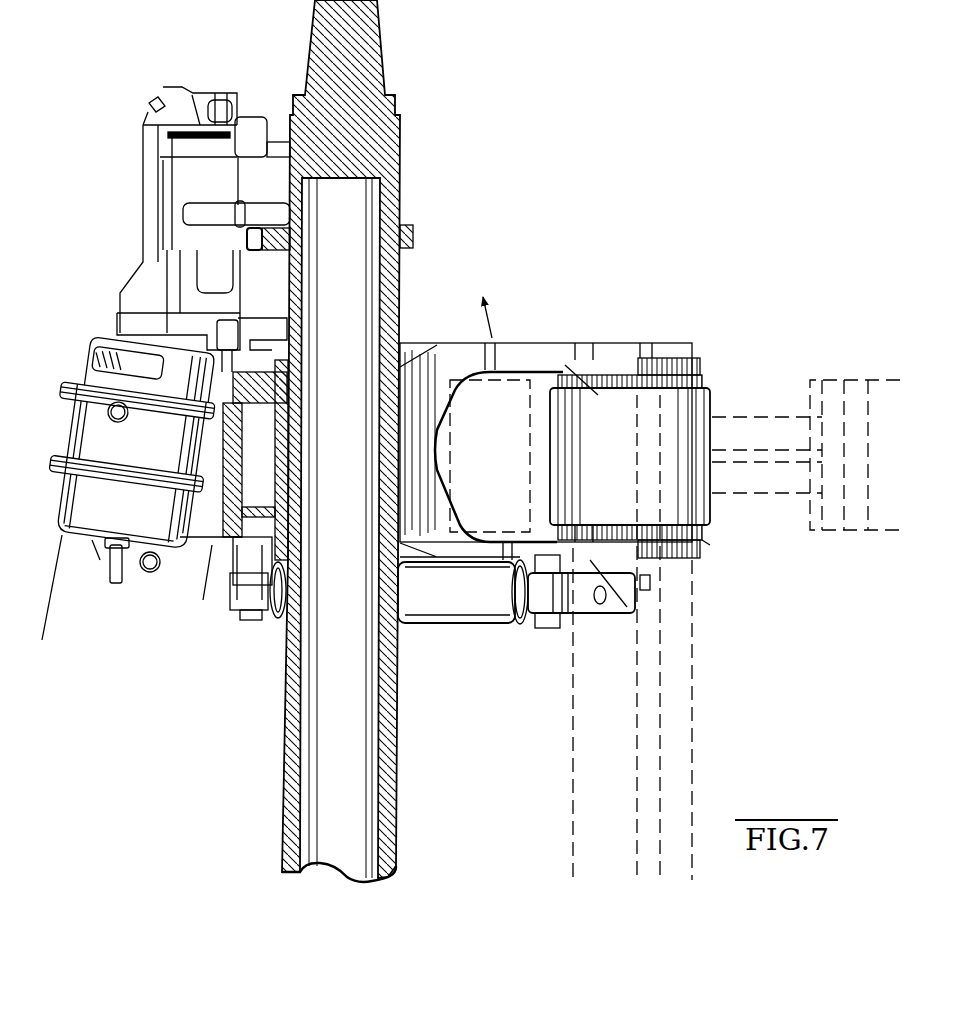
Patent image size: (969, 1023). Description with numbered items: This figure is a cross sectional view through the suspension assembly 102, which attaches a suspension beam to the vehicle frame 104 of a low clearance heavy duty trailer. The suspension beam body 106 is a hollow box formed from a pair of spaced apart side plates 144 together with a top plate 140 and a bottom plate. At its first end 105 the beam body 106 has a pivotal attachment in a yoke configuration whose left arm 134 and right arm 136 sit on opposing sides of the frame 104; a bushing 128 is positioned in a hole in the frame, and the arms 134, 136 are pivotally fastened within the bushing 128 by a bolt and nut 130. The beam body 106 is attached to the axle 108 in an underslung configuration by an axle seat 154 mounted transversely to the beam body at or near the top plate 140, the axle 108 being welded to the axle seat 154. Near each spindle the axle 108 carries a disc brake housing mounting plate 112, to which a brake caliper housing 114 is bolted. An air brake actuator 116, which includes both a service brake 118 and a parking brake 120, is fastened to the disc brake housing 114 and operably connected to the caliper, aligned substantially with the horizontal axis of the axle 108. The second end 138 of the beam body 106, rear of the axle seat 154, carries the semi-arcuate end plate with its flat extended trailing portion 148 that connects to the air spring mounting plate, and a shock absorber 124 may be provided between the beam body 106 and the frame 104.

The suspension assembly 102 is at (433, 415).
The vehicle frame 104 is at (865, 380).
The first end 105 is at (598, 396).
The suspension beam body 106 is at (714, 396).
The axle 108 is at (388, 167).
The disc brake housing mounting plate 112 is at (410, 225).
The brake caliper housing 114 is at (203, 93).
The air brake actuator 116 is at (110, 535).
The service brake 118 is at (108, 345).
The parking brake 120 is at (42, 640).
The shock absorber 124 is at (495, 622).
The bushing 128 is at (708, 528).
The bolt and nut 130 is at (642, 580).
The left arm 134 is at (685, 340).
The right arm 136 is at (638, 615).
The second end 138 is at (212, 545).
The top plate 140 is at (603, 352).
The side plates 144 is at (272, 397).
The flat extended trailing portion 148 is at (108, 522).
The axle seat 154 is at (262, 358).